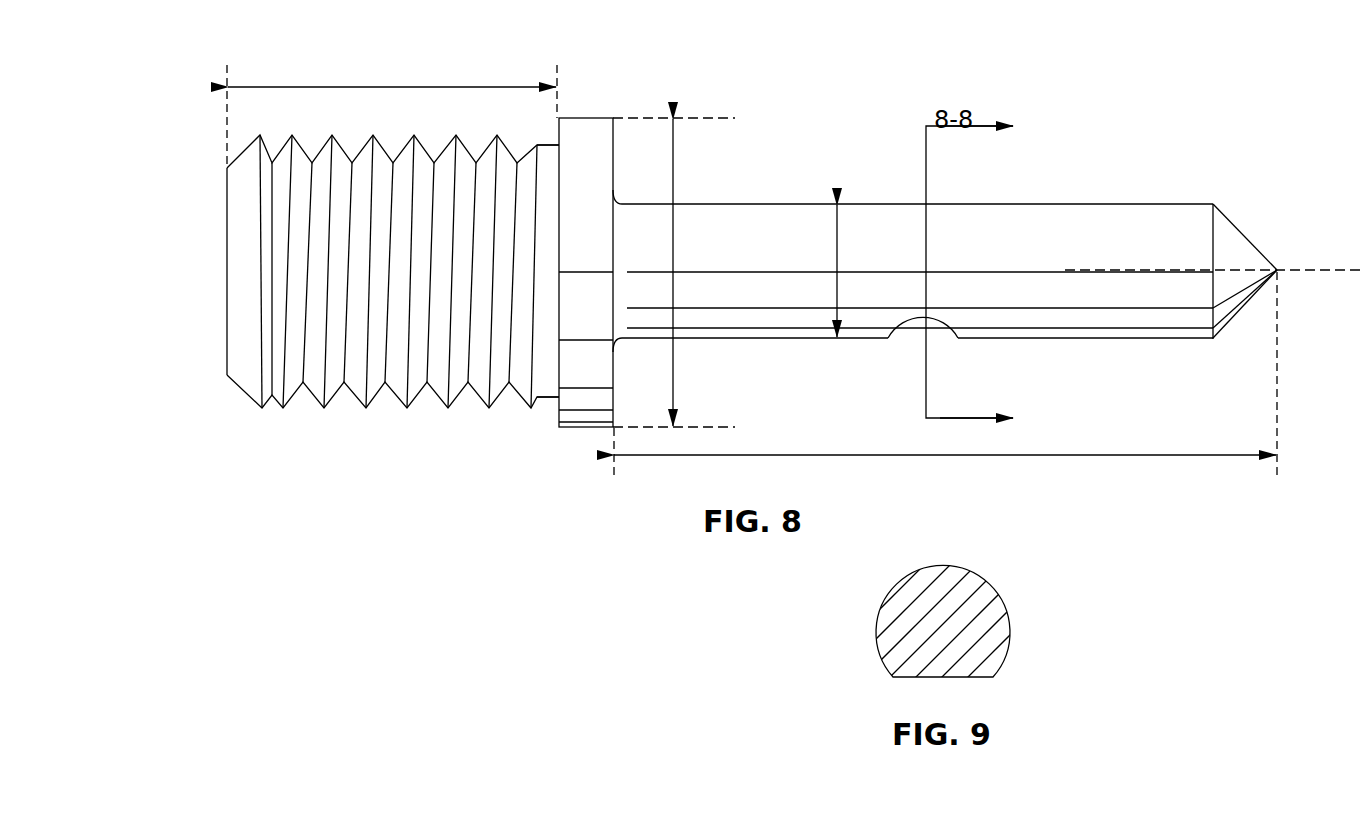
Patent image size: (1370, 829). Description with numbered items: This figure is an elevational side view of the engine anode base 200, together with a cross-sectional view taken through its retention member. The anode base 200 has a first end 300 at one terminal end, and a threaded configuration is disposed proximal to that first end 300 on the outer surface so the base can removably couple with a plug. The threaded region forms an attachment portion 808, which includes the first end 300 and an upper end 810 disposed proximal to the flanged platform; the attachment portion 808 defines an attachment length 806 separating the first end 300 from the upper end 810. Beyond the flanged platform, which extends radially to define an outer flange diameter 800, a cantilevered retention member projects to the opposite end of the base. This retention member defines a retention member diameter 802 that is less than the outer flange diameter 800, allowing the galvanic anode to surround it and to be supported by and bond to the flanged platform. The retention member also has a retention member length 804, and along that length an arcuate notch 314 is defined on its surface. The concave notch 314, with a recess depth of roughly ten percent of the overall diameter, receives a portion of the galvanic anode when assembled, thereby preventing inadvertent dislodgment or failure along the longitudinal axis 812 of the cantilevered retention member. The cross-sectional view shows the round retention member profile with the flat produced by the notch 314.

In FIG. 8, the anode base 200 is at (587, 132).
In FIG. 8, the first end 300 is at (227, 265).
In FIG. 8, the arcuate notch 314 is at (907, 341).
In FIG. 9, the arcuate notch 314 is at (950, 630).
In FIG. 8, the outer flange diameter 800 is at (673, 177).
In FIG. 8, the retention member diameter 802 is at (837, 255).
In FIG. 8, the retention member length 804 is at (1102, 455).
In FIG. 8, the attachment length 806 is at (392, 85).
In FIG. 8, the attachment portion 808 is at (387, 408).
In FIG. 8, the upper end 810 is at (553, 400).
In FIG. 8, the longitudinal axis 812 is at (1333, 268).